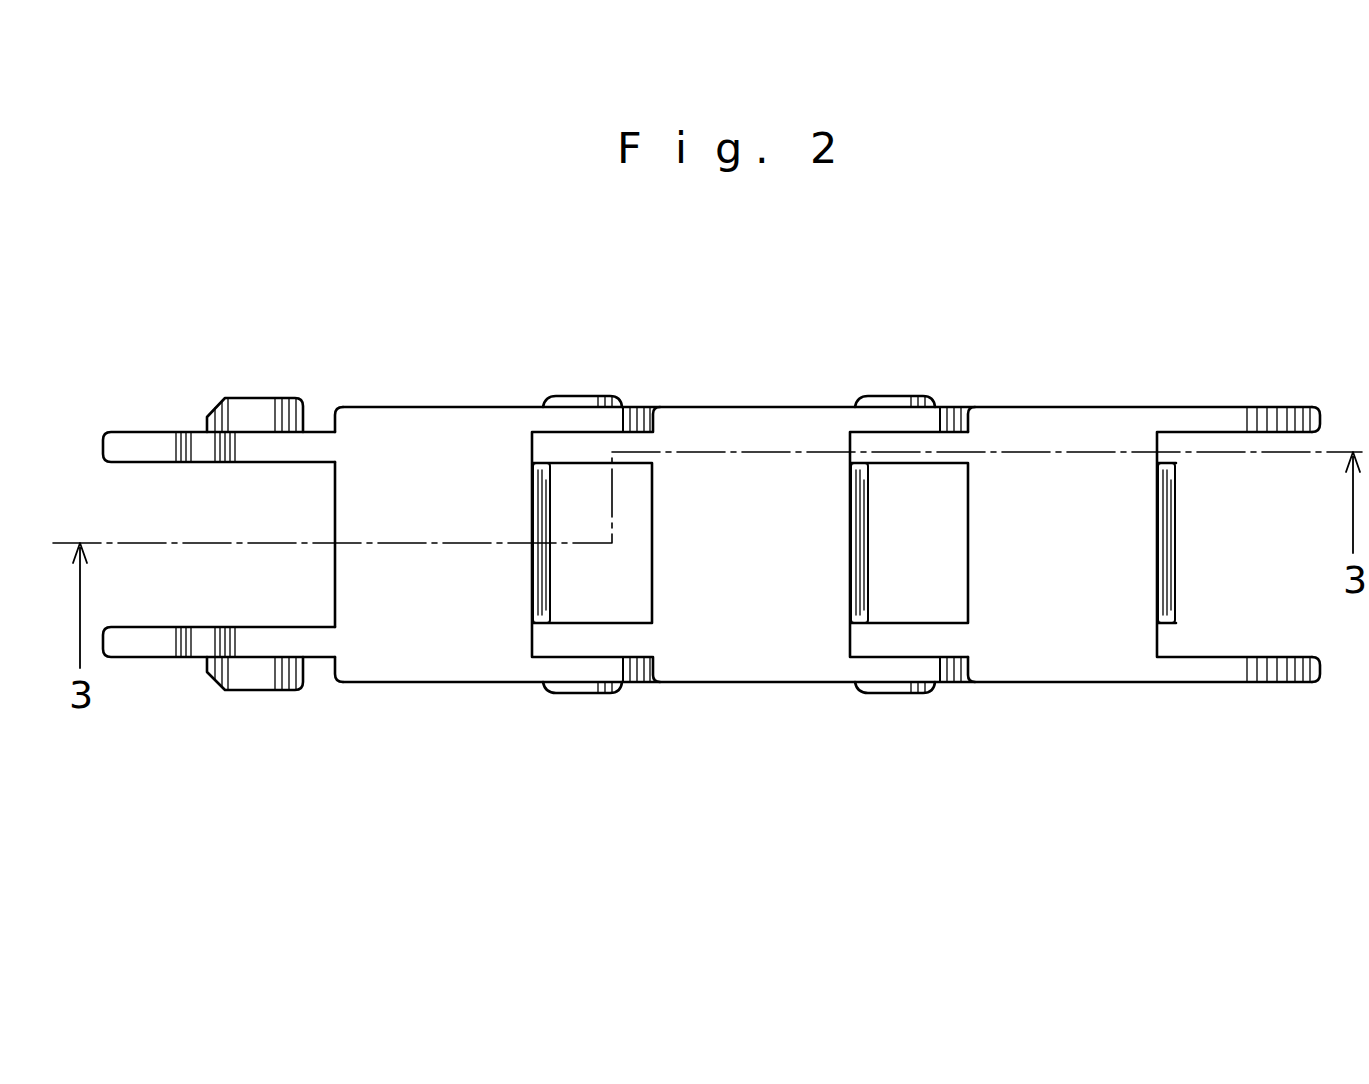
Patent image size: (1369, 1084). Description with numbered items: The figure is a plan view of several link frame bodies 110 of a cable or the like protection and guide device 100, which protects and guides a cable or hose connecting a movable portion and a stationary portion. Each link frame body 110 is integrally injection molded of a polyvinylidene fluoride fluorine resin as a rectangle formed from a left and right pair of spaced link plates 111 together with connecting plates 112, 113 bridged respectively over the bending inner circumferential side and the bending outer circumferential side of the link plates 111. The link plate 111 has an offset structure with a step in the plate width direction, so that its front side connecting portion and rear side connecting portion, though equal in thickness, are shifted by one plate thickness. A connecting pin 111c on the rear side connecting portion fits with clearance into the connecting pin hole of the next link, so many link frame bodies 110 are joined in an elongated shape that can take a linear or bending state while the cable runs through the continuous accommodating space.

The cable or the like protection and guide device 100 is at (1048, 353).
The link frame body 110 is at (667, 765).
The link plate 111 is at (607, 668).
The connecting pin 111c is at (262, 400).
The connecting plate 112 is at (537, 592).
The connecting plate 113 is at (435, 593).